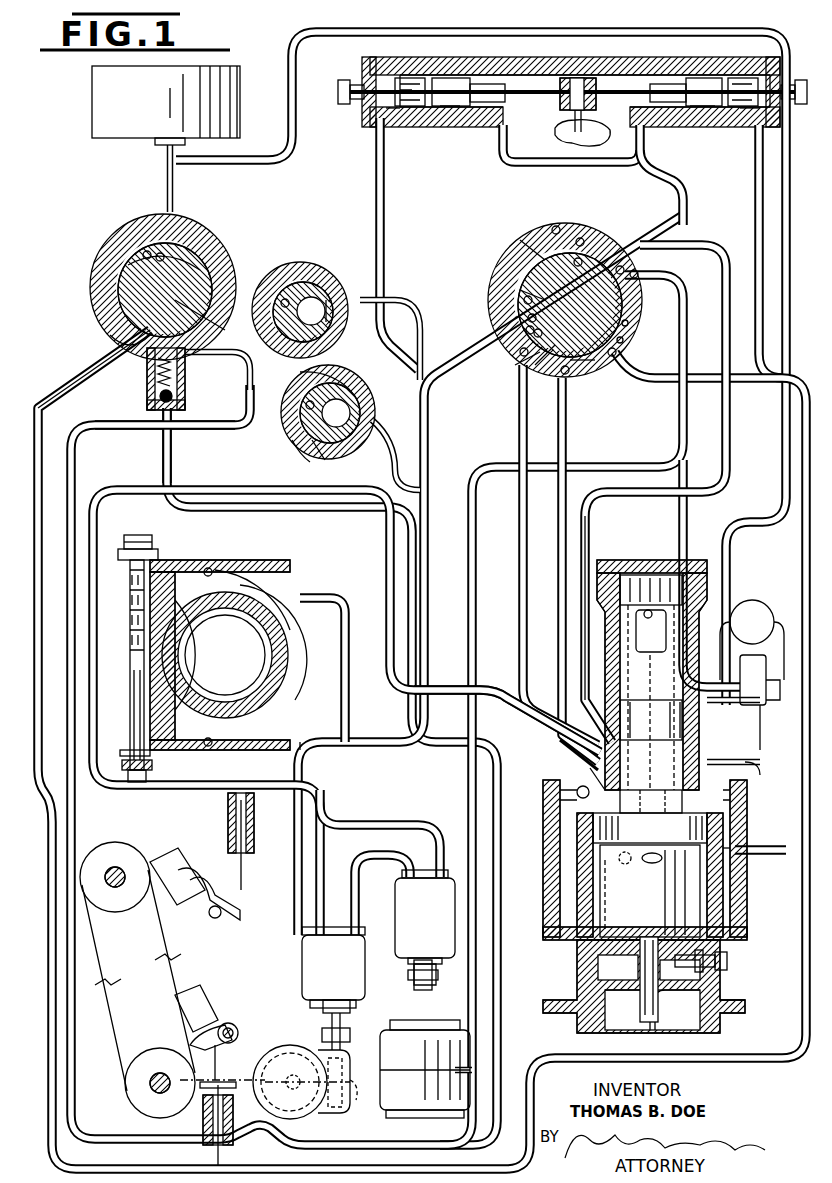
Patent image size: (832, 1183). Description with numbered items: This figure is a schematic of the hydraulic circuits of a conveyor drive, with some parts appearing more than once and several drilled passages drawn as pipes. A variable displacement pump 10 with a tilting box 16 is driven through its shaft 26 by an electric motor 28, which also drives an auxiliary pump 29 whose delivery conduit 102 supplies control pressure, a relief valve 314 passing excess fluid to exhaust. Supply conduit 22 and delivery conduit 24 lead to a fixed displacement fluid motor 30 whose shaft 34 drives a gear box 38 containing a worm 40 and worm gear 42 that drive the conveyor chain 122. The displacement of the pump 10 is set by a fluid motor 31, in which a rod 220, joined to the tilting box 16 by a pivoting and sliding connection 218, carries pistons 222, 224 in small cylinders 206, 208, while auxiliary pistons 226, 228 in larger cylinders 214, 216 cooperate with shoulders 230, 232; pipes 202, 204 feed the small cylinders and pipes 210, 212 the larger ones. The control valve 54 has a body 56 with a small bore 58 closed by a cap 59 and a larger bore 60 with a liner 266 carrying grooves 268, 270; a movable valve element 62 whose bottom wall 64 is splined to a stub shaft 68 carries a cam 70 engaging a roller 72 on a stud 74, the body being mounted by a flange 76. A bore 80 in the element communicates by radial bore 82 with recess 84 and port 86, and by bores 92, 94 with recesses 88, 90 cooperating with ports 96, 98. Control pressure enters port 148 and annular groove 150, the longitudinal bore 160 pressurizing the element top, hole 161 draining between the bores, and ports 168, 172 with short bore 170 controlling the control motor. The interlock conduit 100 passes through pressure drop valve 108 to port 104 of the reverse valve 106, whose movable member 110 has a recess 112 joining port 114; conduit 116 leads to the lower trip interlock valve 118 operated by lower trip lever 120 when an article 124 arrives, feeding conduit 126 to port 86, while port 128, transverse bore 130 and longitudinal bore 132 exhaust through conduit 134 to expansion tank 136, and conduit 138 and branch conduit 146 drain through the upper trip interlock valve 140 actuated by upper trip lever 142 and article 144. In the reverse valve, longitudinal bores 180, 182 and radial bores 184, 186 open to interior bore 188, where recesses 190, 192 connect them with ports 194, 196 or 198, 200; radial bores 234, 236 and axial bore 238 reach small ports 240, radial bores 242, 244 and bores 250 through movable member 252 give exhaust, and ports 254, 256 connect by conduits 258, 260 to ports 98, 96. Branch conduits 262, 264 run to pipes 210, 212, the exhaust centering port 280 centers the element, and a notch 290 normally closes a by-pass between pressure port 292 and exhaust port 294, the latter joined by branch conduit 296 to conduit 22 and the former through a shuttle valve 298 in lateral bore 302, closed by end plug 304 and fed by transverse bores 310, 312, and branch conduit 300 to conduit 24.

The variable displacement pump 10 is at (425, 927).
The tilting box 16 is at (582, 132).
The supply conduit 22 is at (386, 852).
The delivery conduit 24 is at (398, 822).
The shaft 26 is at (437, 973).
The electric motor 28 is at (425, 1069).
The auxiliary pump 29 is at (752, 640).
The fixed displacement fluid motor 30 is at (333, 967).
The fluid motor 31 is at (590, 66).
The shaft 34 is at (330, 1022).
The gear box 38 is at (280, 1050).
The worm 40 is at (345, 1088).
The worm gear 42 is at (297, 1096).
The control valve 54 is at (750, 795).
The body 56 is at (325, 276).
The small bore 58 is at (662, 580).
The cap 59 is at (640, 570).
The larger bore 60 is at (698, 850).
The movable valve element 62 is at (651, 801).
The bottom wall 64 is at (268, 660).
The stub shaft 68 is at (652, 1008).
The cam 70 is at (590, 960).
The roller 72 is at (695, 975).
The stud 74 is at (726, 966).
The flange 76 is at (745, 1010).
The bore 80 is at (640, 612).
The radial bore 82 is at (332, 340).
The recess 84 is at (335, 322).
The port 86 is at (340, 298).
The recess 88 is at (298, 390).
The recess 90 is at (315, 448).
The bore 92 is at (300, 372).
The bore 94 is at (292, 450).
The port 96 is at (362, 395).
The port 98 is at (350, 450).
The conduit 100 is at (488, 688).
The conduit 102 is at (750, 752).
The port 104 is at (148, 365).
The reverse valve 106 is at (210, 232).
The pressure drop valve 108 is at (148, 398).
The movable member 110 is at (118, 280).
The recess 112 is at (176, 360).
The port 114 is at (218, 355).
The conduit 116 is at (122, 430).
The lower trip interlock valve 118 is at (232, 1140).
The lower trip lever 120 is at (215, 1022).
The conveyor chain 122 is at (165, 950).
The article 124 is at (196, 990).
The conduit 126 is at (422, 553).
The port 128 is at (100, 318).
The transverse bore 130 is at (118, 290).
The longitudinal bore 132 is at (215, 328).
The conduit 134 is at (174, 191).
The expansion tank 136 is at (166, 105).
The conduit 138 is at (62, 390).
The upper trip interlock valve 140 is at (230, 840).
The upper trip lever 142 is at (195, 865).
The article 144 is at (165, 852).
The branch conduit 146 is at (330, 742).
The port 148 is at (704, 760).
The annular groove 150 is at (575, 790).
The longitudinal bore 160 is at (300, 268).
The hole 161 is at (773, 762).
The port 168 is at (590, 518).
The short bore 170 is at (690, 700).
The port 172 is at (590, 768).
The longitudinal bore 180 is at (556, 228).
The longitudinal bore 182 is at (578, 368).
The radial bore 184 is at (584, 236).
The radial bore 186 is at (560, 385).
The interior bore 188 is at (632, 337).
The recess 190 is at (515, 268).
The recess 192 is at (590, 370).
The port 194 is at (535, 238).
The port 196 is at (622, 353).
The port 198 is at (628, 265).
The port 200 is at (520, 362).
The pipe 202 is at (484, 180).
The pipe 204 is at (685, 174).
The small cylinder 206 is at (480, 85).
The small cylinder 208 is at (684, 78).
The pipe 210 is at (756, 186).
The pipe 212 is at (382, 213).
The larger cylinder 214 is at (752, 115).
The larger cylinder 216 is at (416, 112).
The pivoting and sliding connection 218 is at (570, 112).
The rod 220 is at (545, 98).
The piston 222 is at (452, 78).
The piston 224 is at (700, 78).
The auxiliary piston 226 is at (728, 80).
The auxiliary piston 228 is at (428, 66).
The shoulder 230 is at (445, 110).
The shoulder 232 is at (720, 112).
The radial bore 234 is at (535, 365).
The radial bore 236 is at (635, 321).
The axial bore 238 is at (518, 630).
The small ports 240 is at (560, 740).
The radial bore 242 is at (525, 325).
The radial bore 244 is at (525, 300).
The bores 250 is at (147, 250).
The reverse valve movable member 252 is at (520, 290).
The port 254 is at (520, 350).
The port 256 is at (640, 270).
The conduit 258 is at (452, 358).
The conduit 260 is at (628, 467).
The branch conduit 262 is at (806, 553).
The branch conduit 264 is at (205, 565).
The liner 266 is at (282, 640).
The groove 268 is at (735, 850).
The groove 270 is at (612, 862).
The exhaust centering port 280 is at (650, 865).
The notch 290 is at (222, 560).
The pressure port 292 is at (200, 560).
The exhaust port 294 is at (258, 555).
The branch conduit 296 is at (350, 610).
The shuttle valve 298 is at (130, 612).
The branch conduit 300 is at (140, 786).
The lateral bore 302 is at (118, 682).
The end plug 304 is at (136, 533).
The transverse bore 310 is at (162, 558).
The transverse bore 312 is at (172, 740).
The relief valve 314 is at (760, 680).